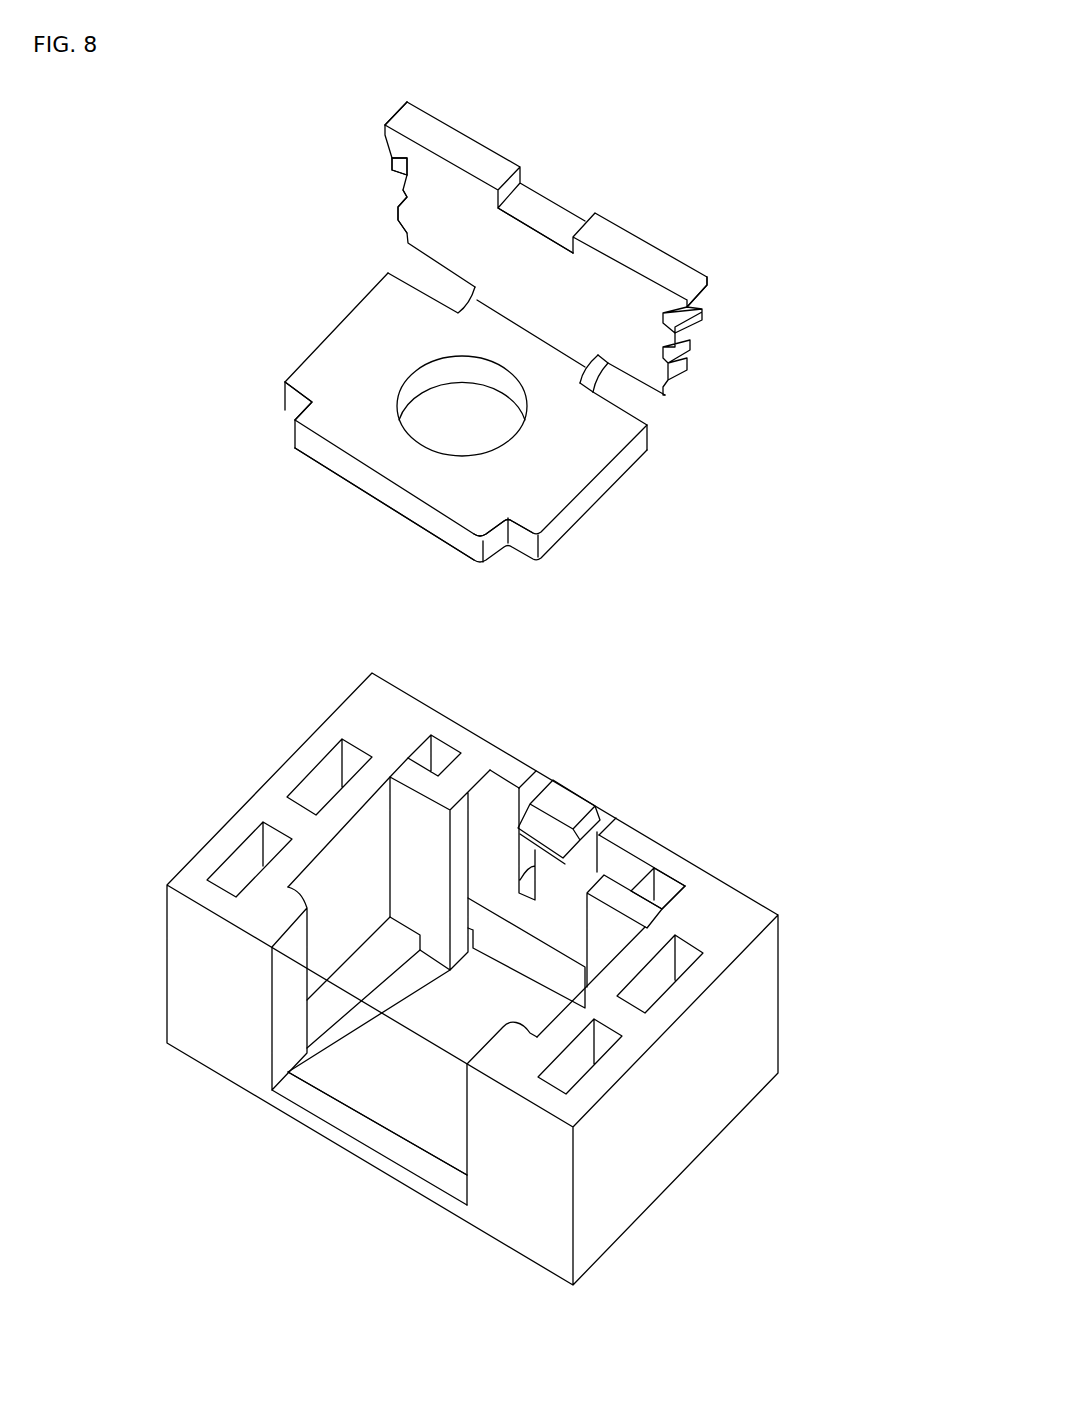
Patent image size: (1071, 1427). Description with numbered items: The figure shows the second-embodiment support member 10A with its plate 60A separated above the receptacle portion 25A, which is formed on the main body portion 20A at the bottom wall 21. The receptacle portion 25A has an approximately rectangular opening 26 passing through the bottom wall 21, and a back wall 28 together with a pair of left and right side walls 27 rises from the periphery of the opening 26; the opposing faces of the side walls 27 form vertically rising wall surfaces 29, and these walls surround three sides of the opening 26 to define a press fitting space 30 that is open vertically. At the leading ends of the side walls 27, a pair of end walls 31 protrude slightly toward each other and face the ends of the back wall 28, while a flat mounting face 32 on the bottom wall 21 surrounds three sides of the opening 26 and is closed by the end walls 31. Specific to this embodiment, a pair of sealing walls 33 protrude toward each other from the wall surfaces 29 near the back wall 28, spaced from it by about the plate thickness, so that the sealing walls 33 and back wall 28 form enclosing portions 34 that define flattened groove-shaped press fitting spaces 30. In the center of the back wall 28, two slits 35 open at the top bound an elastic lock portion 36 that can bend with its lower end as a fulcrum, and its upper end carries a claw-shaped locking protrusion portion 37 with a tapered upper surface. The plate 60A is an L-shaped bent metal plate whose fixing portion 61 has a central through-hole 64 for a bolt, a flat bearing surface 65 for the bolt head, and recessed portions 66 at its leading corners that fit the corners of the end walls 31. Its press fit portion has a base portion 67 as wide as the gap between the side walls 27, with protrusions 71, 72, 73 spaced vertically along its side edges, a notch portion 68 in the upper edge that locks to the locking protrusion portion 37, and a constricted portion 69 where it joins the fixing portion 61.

The support member 10A is at (834, 660).
The main body portion 20A is at (780, 1017).
The bottom wall 21 is at (310, 1122).
The receptacle portion 25A is at (748, 917).
The opening 26 is at (397, 1120).
The side walls 27 is at (268, 800).
The back wall 28 is at (498, 760).
The wall surfaces 29 is at (350, 847).
The press fitting space 30 is at (673, 897).
The end walls 31 is at (255, 1078).
The mounting face 32 is at (343, 980).
The sealing walls 33 is at (442, 793).
The enclosing portions 34 is at (460, 770).
The slits 35 is at (533, 792).
The elastic lock portion 36 is at (577, 792).
The locking protrusion portion 37 is at (550, 830).
The plate 60A is at (497, 150).
The fixing portion 61 is at (347, 347).
The through-hole 64 is at (427, 440).
The bearing surface 65 is at (447, 497).
The recessed portions 66 is at (302, 407).
The base portion 67 is at (590, 283).
The notch portion 68 is at (553, 220).
The constricted portion 69 is at (593, 382).
The protrusion 71 is at (398, 215).
The protrusion 72 is at (392, 168).
The protrusion 73 is at (402, 107).